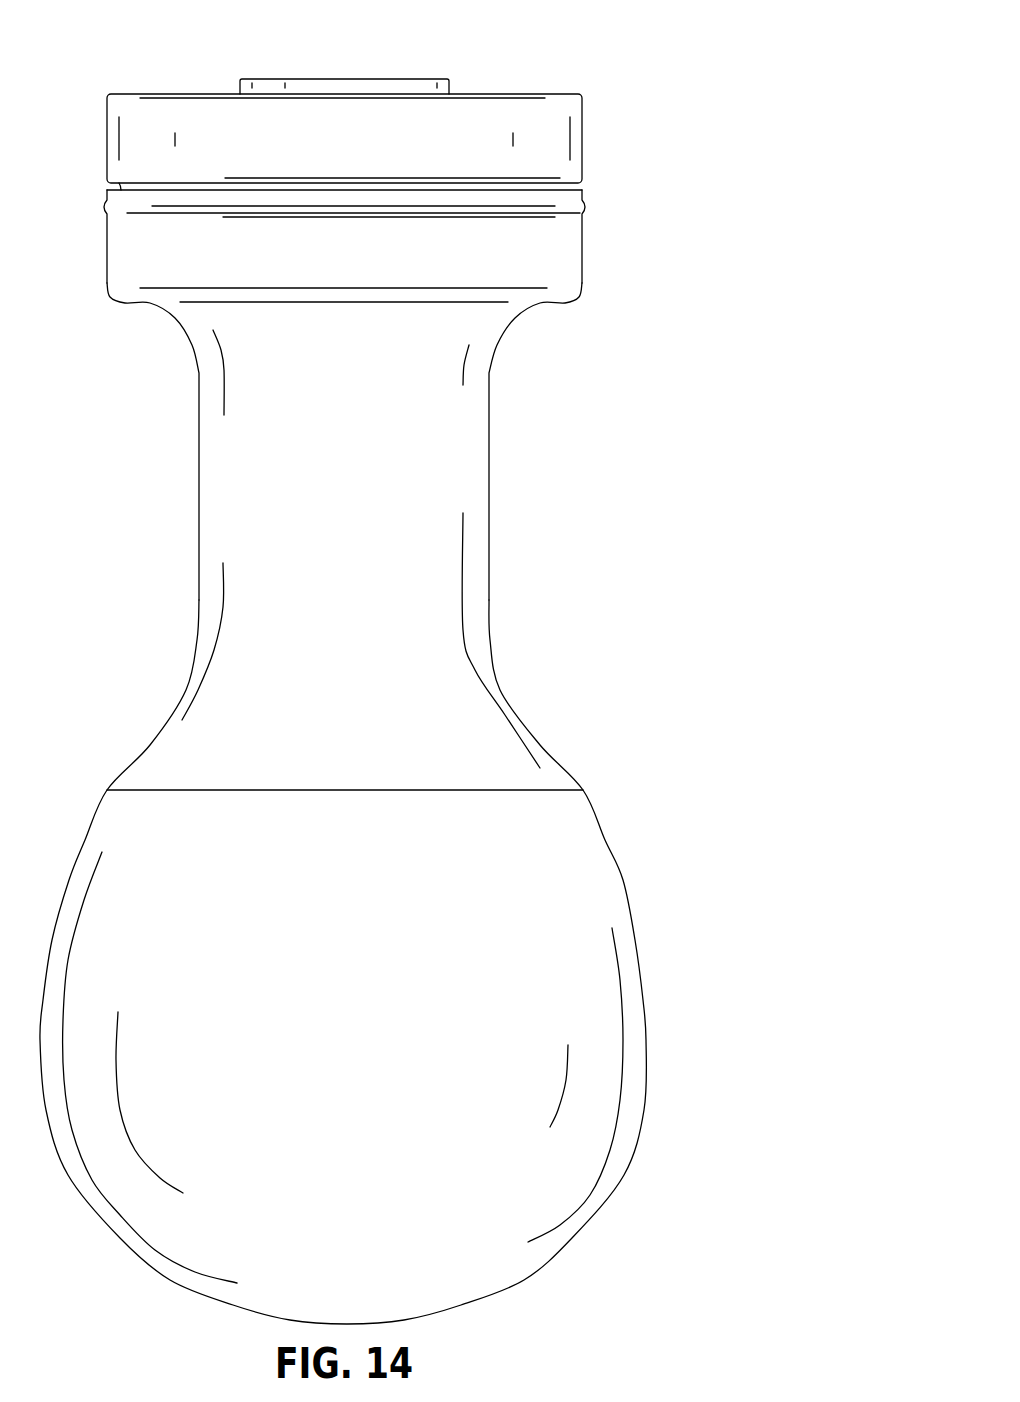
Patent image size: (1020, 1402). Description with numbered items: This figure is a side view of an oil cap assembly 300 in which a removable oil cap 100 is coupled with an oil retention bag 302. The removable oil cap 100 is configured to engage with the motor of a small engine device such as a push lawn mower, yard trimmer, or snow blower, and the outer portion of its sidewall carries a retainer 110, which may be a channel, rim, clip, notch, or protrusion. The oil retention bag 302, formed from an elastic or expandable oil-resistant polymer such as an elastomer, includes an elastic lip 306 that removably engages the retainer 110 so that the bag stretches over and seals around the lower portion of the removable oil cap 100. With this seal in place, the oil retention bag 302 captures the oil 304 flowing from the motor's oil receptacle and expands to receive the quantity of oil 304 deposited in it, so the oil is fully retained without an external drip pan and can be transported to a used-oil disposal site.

The oil cap assembly 300 is at (385, 664).
The removable oil cap 100 is at (582, 139).
The retainer 110 is at (567, 186).
The elastic lip 306 is at (583, 195).
The oil retention bag 302 is at (540, 722).
The oil 304 is at (558, 887).